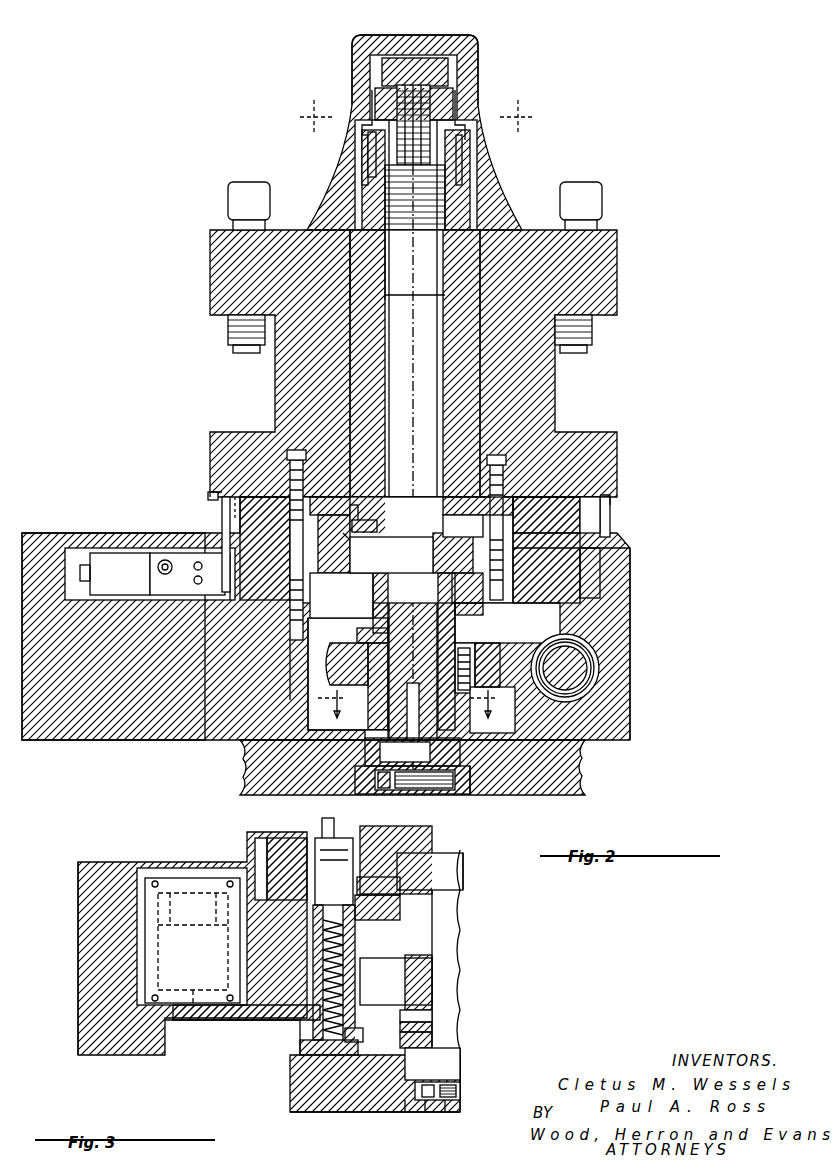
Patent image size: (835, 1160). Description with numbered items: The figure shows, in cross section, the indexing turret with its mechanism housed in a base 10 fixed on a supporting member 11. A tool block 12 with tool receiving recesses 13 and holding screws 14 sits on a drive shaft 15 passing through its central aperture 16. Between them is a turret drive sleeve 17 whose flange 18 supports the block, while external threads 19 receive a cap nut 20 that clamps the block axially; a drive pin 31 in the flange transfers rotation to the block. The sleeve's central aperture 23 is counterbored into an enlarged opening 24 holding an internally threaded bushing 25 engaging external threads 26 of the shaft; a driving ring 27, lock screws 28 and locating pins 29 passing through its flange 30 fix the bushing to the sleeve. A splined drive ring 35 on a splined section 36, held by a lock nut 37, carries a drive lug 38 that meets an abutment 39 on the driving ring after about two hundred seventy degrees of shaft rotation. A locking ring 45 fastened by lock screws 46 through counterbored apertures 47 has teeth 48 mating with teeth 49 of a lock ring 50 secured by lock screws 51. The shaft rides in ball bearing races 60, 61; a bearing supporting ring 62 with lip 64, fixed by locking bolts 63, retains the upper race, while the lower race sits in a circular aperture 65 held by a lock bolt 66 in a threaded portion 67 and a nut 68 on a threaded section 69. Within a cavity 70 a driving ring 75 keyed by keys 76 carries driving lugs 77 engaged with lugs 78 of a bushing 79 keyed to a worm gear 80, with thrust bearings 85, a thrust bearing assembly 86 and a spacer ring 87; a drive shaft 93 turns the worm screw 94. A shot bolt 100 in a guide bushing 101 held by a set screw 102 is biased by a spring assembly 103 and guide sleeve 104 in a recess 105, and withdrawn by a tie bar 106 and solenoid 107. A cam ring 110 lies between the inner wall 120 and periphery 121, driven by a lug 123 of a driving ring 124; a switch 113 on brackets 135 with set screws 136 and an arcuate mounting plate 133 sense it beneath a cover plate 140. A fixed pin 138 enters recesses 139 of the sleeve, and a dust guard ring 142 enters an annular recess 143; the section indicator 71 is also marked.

In FIG. 2, the base 10 is at (660, 608).
In FIG. 3, the base 10 is at (48, 1025).
In FIG. 2, the supporting member 11 is at (586, 770).
In FIG. 3, the supporting member 11 is at (380, 1112).
In FIG. 2, the tool block 12 is at (585, 405).
In FIG. 2, the tool receiving recesses 13 is at (240, 378).
In FIG. 2, the screws 14 is at (240, 200).
In FIG. 2, the drive shaft 15 is at (412, 455).
In FIG. 3, the drive shaft 15 is at (455, 945).
In FIG. 2, the central aperture 16 is at (482, 406).
In FIG. 2, the turret drive sleeve 17 is at (368, 357).
In FIG. 2, the flange 18 is at (330, 500).
In FIG. 3, the flange 18 is at (395, 840).
In FIG. 2, the external threads 19 is at (345, 190).
In FIG. 2, the cap nut 20 is at (402, 36).
In FIG. 2, the central aperture 23 is at (397, 296).
In FIG. 2, the enlarged opening 24 is at (372, 255).
In FIG. 2, the internally threaded bushing 25 is at (372, 218).
In FIG. 2, the external threads 26 is at (402, 185).
In FIG. 2, the driving ring 27 is at (319, 114).
In FIG. 2, the lock screws 28 is at (513, 113).
In FIG. 2, the locating pins 29 is at (362, 145).
In FIG. 2, the flange 30 is at (368, 160).
In FIG. 2, the drive pin 31 is at (500, 482).
In FIG. 2, the internally splined drive ring 35 is at (455, 95).
In FIG. 2, the splined section 36 is at (413, 125).
In FIG. 2, the lock nut 37 is at (438, 75).
In FIG. 2, the drive lug 38 is at (372, 110).
In FIG. 2, the abutment 39 is at (460, 112).
In FIG. 2, the locking ring 45 is at (626, 520).
In FIG. 2, the lock screws 46 is at (296, 470).
In FIG. 2, the counterbored apertures 47 is at (265, 538).
In FIG. 2, the teeth 48 is at (617, 551).
In FIG. 2, the teeth 49 is at (250, 590).
In FIG. 2, the lock ring 50 is at (325, 595).
In FIG. 3, the lock ring 50 is at (387, 898).
In FIG. 2, the lock screws 51 is at (305, 620).
In FIG. 2, the ball bearing race 60 is at (411, 553).
In FIG. 3, the ball bearing race 60 is at (463, 870).
In FIG. 2, the ball bearing race 61 is at (412, 752).
In FIG. 3, the ball bearing race 61 is at (462, 1062).
In FIG. 2, the bearing supporting ring 62 is at (377, 525).
In FIG. 3, the bearing supporting ring 62 is at (430, 871).
In FIG. 2, the locking bolts 63 is at (546, 515).
In FIG. 2, the lip or flange 64 is at (478, 513).
In FIG. 2, the circular aperture 65 is at (365, 740).
In FIG. 3, the circular aperture 65 is at (432, 1064).
In FIG. 2, the lock bolt 66 is at (455, 790).
In FIG. 3, the lock bolt 66 is at (425, 1105).
In FIG. 2, the threaded portion 67 is at (472, 794).
In FIG. 3, the threaded portion 67 is at (405, 1100).
In FIG. 2, the nut 68 is at (382, 789).
In FIG. 3, the nut 68 is at (445, 1105).
In FIG. 2, the threaded section 69 is at (410, 790).
In FIG. 3, the threaded section 69 is at (460, 1092).
In FIG. 2, the cavity 70 is at (515, 722).
In FIG. 3, the cavity 70 is at (380, 1048).
In FIG. 2, the section line 71 is at (331, 708).
In FIG. 2, the driving ring 75 is at (475, 740).
In FIG. 3, the driving ring 75 is at (432, 1040).
In FIG. 2, the keys 76 is at (400, 680).
In FIG. 2, the driving lugs 77 is at (487, 712).
In FIG. 2, the driving lugs 78 is at (347, 664).
In FIG. 3, the driving lugs 78 is at (400, 1016).
In FIG. 2, the bushing 79 is at (398, 640).
In FIG. 3, the bushing 79 is at (432, 990).
In FIG. 2, the worm gear 80 is at (325, 672).
In FIG. 3, the worm gear 80 is at (432, 968).
In FIG. 2, the thrust bearings 85 is at (380, 695).
In FIG. 3, the thrust bearings 85 is at (432, 1027).
In FIG. 2, the thrust bearing assembly 86 is at (460, 612).
In FIG. 2, the spacer ring 87 is at (467, 588).
In FIG. 2, the drive shaft 93 is at (572, 660).
In FIG. 2, the worm screw 94 is at (560, 690).
In FIG. 3, the shot bolt 100 is at (334, 871).
In FIG. 3, the guide bushing 101 is at (355, 945).
In FIG. 3, the set screw 102 is at (325, 838).
In FIG. 3, the spring assembly 103 is at (363, 1033).
In FIG. 3, the guide sleeve 104 is at (312, 1045).
In FIG. 3, the recess 105 is at (345, 932).
In FIG. 3, the tie bar 106 is at (250, 1020).
In FIG. 3, the solenoid 107 is at (152, 878).
In FIG. 2, the cam ring 110 is at (238, 608).
In FIG. 3, the cam ring 110 is at (283, 848).
In FIG. 2, the switch 113 is at (188, 553).
In FIG. 2, the inner wall 120 is at (610, 572).
In FIG. 2, the periphery 121 is at (575, 578).
In FIG. 2, the lug 123 is at (222, 505).
In FIG. 2, the driving ring 124 is at (240, 493).
In FIG. 2, the arcuate mounting plate 133 is at (225, 592).
In FIG. 2, the brackets 135 is at (128, 553).
In FIG. 2, the set screws 136 is at (150, 570).
In FIG. 2, the fixed pin 138 is at (365, 542).
In FIG. 2, the recesses 139 is at (356, 510).
In FIG. 2, the cover plate 140 is at (55, 533).
In FIG. 3, the cover plate 140 is at (100, 862).
In FIG. 2, the dust guard ring 142 is at (208, 488).
In FIG. 3, the dust guard ring 142 is at (260, 845).
In FIG. 2, the annular recess 143 is at (212, 492).